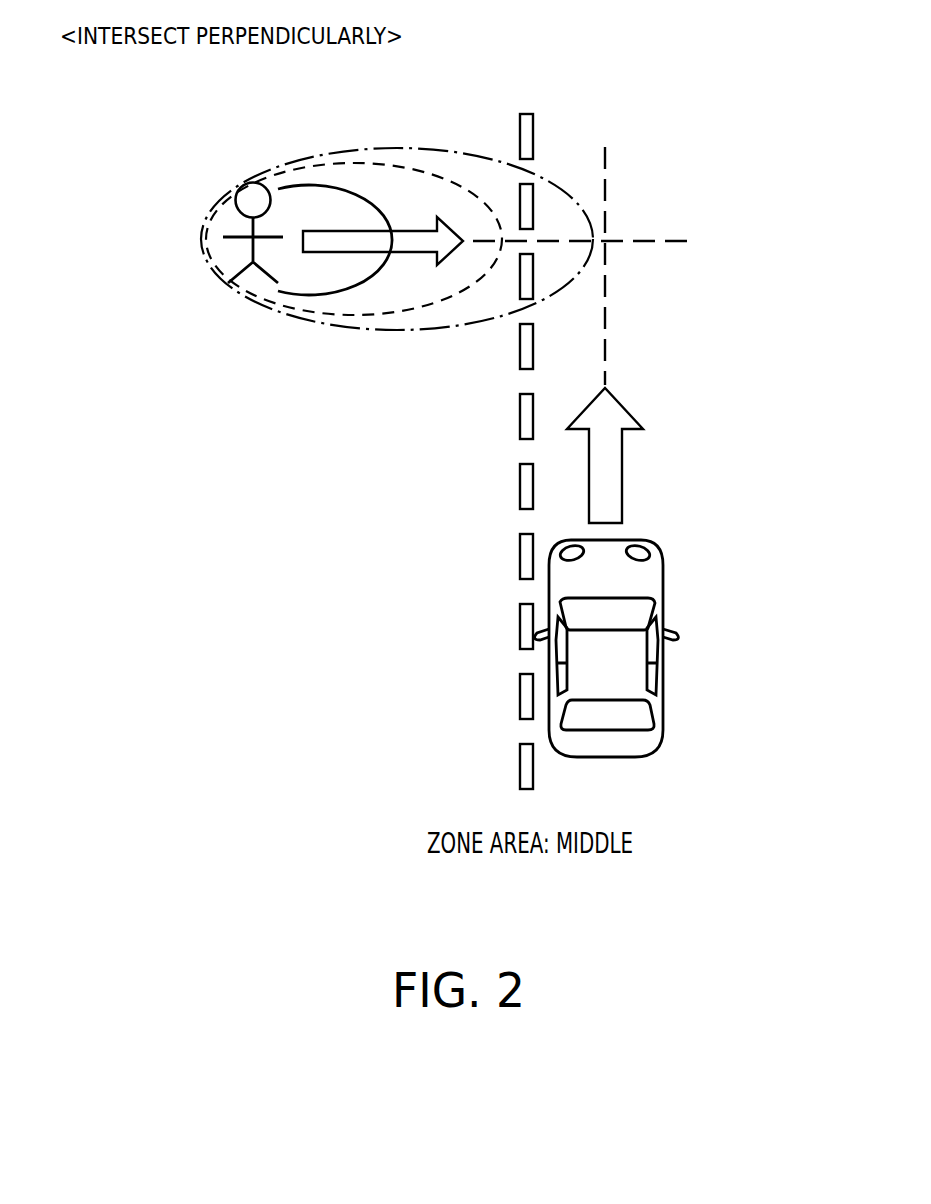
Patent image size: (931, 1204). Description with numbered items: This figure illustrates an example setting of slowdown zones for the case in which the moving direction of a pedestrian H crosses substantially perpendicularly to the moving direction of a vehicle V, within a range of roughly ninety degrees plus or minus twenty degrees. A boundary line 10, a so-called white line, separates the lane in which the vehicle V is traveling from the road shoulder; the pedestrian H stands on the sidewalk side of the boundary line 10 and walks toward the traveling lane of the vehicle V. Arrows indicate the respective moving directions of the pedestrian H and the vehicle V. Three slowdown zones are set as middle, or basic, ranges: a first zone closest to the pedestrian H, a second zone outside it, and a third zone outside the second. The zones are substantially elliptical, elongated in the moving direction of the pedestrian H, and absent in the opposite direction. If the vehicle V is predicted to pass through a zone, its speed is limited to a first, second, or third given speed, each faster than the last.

The pedestrian H is at (236, 196).
The boundary line 10 is at (520, 689).
The vehicle V is at (660, 668).